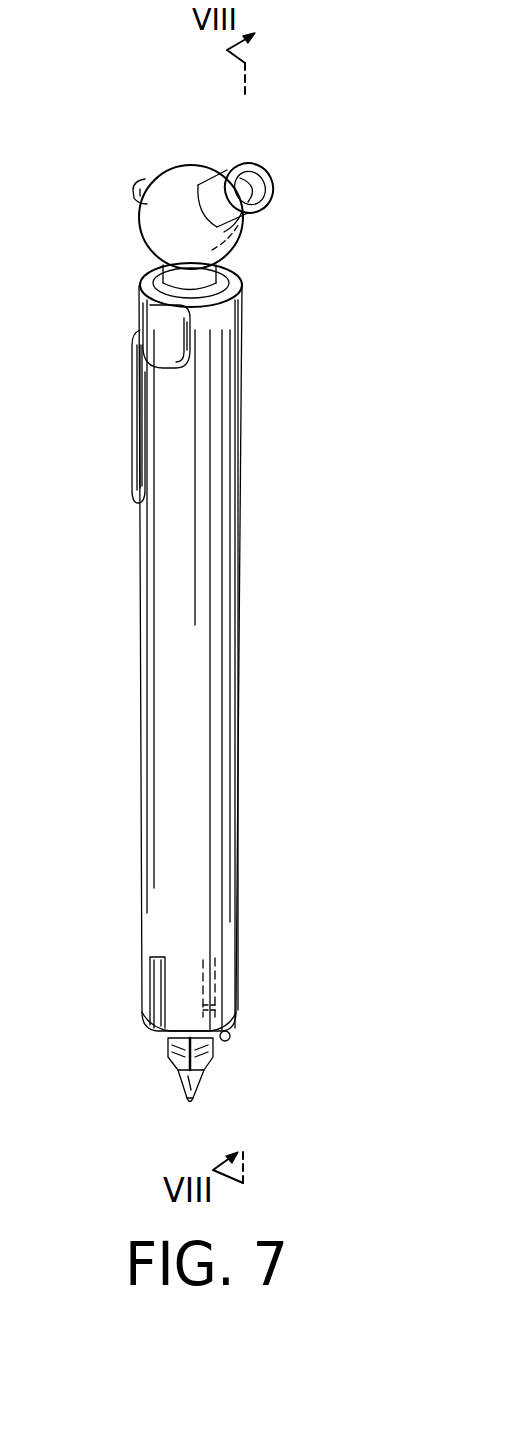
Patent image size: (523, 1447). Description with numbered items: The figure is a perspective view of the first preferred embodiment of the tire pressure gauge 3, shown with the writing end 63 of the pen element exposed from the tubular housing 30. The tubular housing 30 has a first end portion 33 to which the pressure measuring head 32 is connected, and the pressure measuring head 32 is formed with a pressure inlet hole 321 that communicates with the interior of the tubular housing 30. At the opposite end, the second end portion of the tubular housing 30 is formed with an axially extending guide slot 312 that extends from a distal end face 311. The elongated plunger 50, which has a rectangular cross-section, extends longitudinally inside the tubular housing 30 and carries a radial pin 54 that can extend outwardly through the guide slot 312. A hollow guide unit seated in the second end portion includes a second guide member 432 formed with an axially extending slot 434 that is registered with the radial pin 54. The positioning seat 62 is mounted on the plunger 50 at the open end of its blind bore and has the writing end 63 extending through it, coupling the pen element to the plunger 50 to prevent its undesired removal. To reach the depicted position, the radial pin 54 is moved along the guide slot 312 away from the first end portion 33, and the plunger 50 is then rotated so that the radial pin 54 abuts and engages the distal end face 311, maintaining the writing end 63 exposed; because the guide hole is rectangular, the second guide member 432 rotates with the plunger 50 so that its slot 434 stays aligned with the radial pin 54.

The tire pressure gauge 3 is at (131, 508).
The tubular housing 30 is at (152, 655).
The pressure measuring head 32 is at (172, 178).
The pressure inlet hole 321 is at (253, 167).
The first end portion 33 is at (225, 562).
The distal end face 311 is at (228, 1024).
The guide slot 312 is at (152, 990).
The second guide member 432 is at (223, 982).
The axially extending slot 434 is at (213, 1010).
The elongated plunger 50 is at (168, 1052).
The radial pin 54 is at (230, 1040).
The positioning seat 62 is at (195, 1077).
The writing end 63 is at (195, 1100).